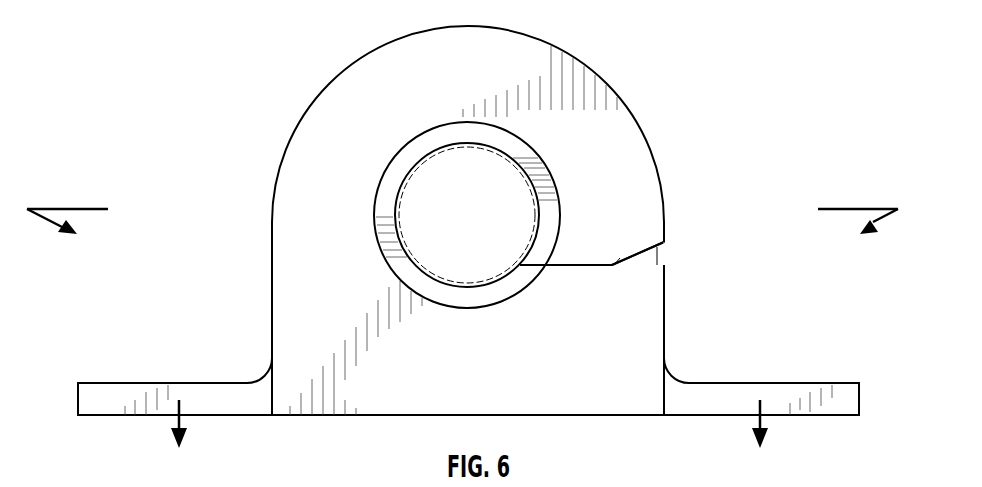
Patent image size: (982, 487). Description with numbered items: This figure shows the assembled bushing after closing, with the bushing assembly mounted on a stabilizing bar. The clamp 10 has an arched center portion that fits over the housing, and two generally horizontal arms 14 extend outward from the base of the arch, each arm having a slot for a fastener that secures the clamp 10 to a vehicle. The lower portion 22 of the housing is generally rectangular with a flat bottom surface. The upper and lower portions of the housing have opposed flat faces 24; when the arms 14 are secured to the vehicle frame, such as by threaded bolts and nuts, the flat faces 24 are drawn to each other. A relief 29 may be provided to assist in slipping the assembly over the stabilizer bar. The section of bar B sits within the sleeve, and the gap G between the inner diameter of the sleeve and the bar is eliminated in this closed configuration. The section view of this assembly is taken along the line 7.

The section line 7 is at (462, 328).
The clamp 10 is at (676, 249).
The arms 14 is at (87, 398).
The lower portion 22 is at (481, 383).
The flat faces 24 is at (568, 265).
The relief 29 is at (642, 247).
The gap G is at (434, 149).
The bar B is at (525, 175).